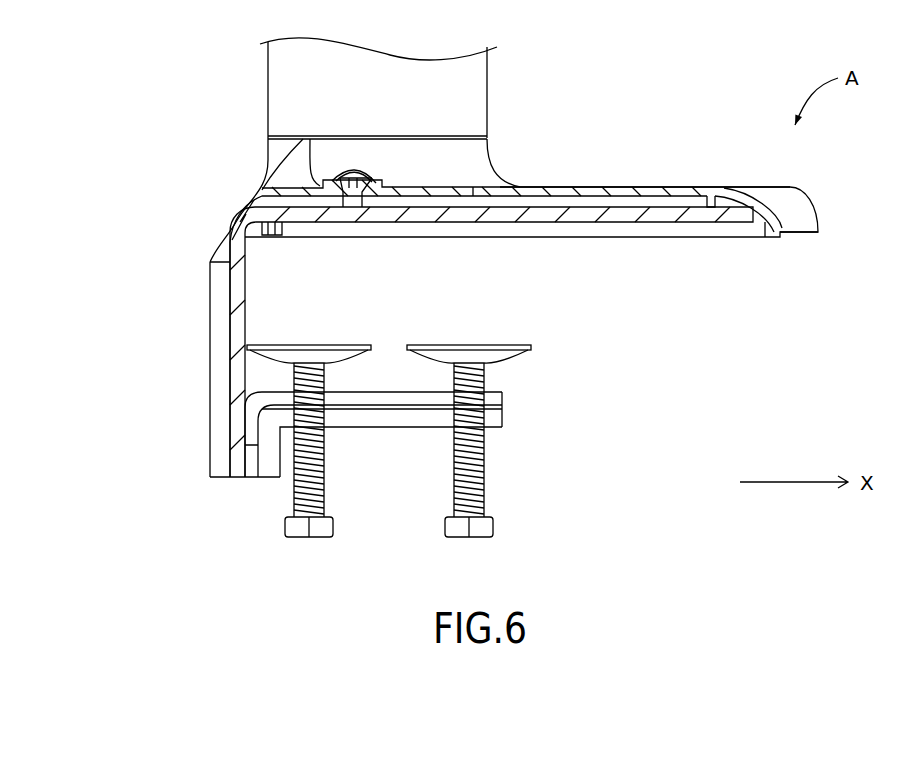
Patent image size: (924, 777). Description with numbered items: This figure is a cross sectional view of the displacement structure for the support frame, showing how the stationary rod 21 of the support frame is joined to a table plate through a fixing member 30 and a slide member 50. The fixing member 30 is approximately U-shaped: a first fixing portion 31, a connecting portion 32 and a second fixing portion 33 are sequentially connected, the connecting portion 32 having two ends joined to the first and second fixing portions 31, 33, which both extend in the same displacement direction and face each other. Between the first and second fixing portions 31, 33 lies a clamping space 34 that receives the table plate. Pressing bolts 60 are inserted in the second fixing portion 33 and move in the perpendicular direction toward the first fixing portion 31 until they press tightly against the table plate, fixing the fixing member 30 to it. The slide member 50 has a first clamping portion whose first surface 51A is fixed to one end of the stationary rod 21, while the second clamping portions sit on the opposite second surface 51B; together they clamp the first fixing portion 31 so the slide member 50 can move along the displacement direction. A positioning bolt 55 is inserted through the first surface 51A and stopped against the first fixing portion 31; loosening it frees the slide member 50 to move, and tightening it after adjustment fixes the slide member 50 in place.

The stationary rod 21 is at (272, 97).
The fixing member 30 is at (484, 325).
The first fixing portion 31 is at (665, 215).
The connecting portion 32 is at (238, 332).
The second fixing portion 33 is at (503, 396).
The clamping space 34 is at (518, 316).
The slide member 50 is at (618, 183).
The first surface 51A is at (668, 187).
The second surface 51B is at (750, 238).
The positioning bolt 55 is at (346, 192).
The pressing bolt 60 is at (300, 498).